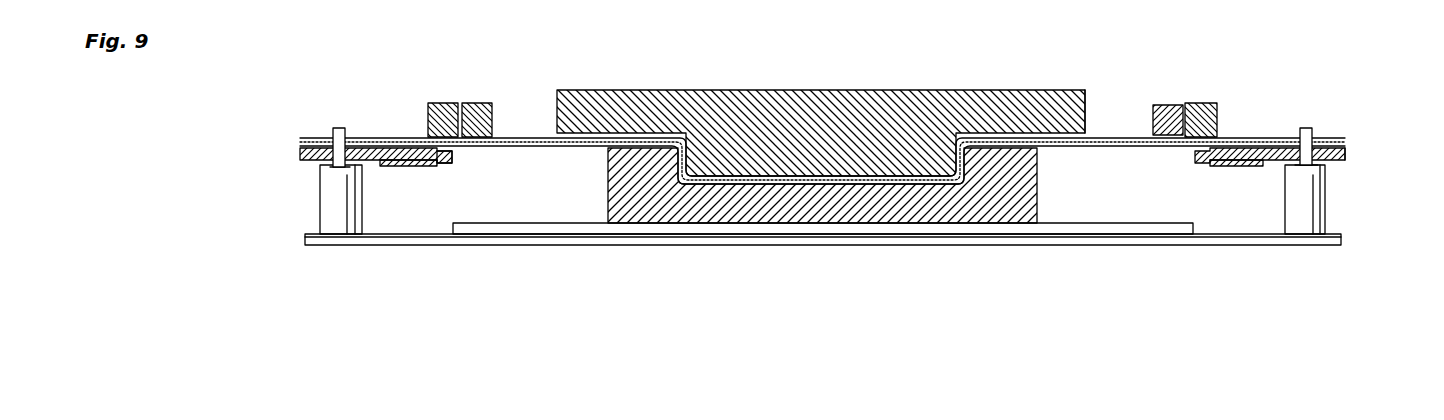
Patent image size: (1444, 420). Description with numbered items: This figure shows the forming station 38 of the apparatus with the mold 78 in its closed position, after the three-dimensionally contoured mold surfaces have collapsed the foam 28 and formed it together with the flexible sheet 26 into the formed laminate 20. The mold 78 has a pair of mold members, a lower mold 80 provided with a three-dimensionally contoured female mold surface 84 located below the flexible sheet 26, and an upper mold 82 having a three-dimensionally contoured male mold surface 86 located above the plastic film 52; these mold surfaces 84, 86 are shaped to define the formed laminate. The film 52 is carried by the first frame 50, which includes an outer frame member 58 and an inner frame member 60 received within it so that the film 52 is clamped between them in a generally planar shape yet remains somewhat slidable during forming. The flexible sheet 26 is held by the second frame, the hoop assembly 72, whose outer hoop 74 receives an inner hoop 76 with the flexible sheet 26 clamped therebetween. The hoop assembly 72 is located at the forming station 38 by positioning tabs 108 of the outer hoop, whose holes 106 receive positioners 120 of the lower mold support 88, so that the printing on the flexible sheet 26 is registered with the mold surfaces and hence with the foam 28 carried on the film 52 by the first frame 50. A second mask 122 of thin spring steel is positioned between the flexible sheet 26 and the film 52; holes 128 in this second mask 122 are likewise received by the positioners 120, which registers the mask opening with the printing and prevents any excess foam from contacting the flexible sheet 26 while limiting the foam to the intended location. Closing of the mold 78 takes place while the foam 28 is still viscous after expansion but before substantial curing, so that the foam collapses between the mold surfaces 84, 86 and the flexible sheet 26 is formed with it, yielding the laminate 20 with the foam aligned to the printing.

The formed laminate 20 is at (760, 192).
The flexible sheet 26 is at (1147, 150).
The foam 28 is at (807, 178).
The forming station 38 is at (396, 46).
The first frame 50 is at (1224, 118).
The plastic film 52 is at (1122, 137).
The outer frame member 58 is at (426, 122).
The inner frame member 60 is at (473, 104).
The hoop assembly 72 is at (1350, 150).
The outer hoop 74 is at (400, 152).
The inner hoop 76 is at (450, 157).
The mold 78 is at (550, 108).
The lower mold 80 is at (1037, 175).
The upper mold 82 is at (1087, 113).
The female mold surface 84 is at (890, 170).
The male mold surface 86 is at (760, 176).
The lower mold support 88 is at (1082, 245).
The holes 106 is at (338, 167).
The positioning tabs 108 is at (312, 140).
The positioners 120 is at (330, 215).
The second mask 122 is at (608, 134).
The holes 128 is at (343, 132).